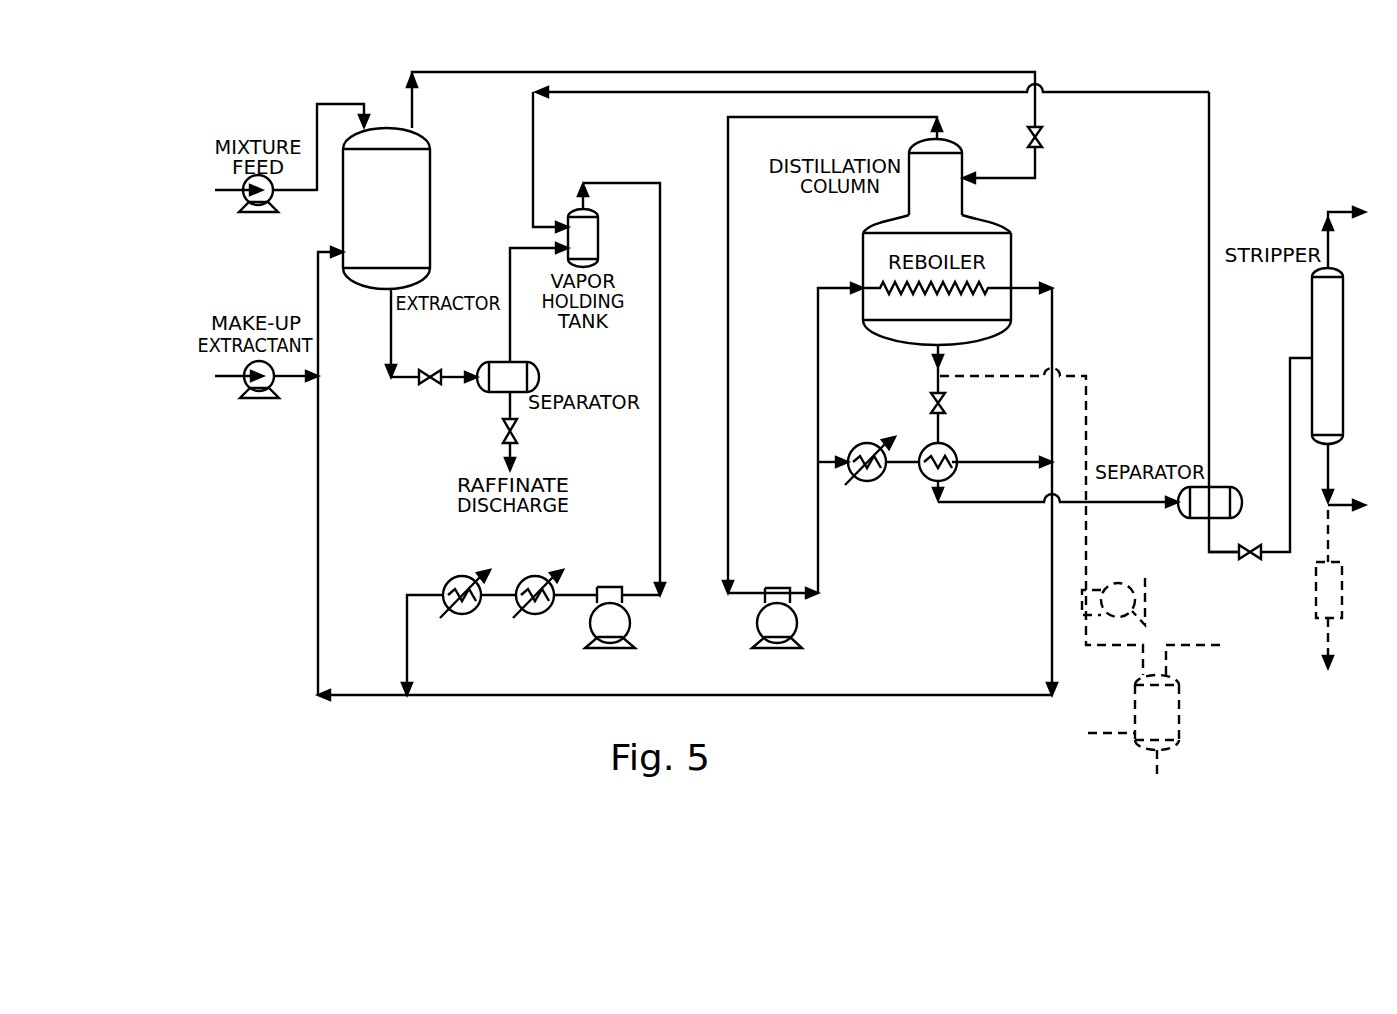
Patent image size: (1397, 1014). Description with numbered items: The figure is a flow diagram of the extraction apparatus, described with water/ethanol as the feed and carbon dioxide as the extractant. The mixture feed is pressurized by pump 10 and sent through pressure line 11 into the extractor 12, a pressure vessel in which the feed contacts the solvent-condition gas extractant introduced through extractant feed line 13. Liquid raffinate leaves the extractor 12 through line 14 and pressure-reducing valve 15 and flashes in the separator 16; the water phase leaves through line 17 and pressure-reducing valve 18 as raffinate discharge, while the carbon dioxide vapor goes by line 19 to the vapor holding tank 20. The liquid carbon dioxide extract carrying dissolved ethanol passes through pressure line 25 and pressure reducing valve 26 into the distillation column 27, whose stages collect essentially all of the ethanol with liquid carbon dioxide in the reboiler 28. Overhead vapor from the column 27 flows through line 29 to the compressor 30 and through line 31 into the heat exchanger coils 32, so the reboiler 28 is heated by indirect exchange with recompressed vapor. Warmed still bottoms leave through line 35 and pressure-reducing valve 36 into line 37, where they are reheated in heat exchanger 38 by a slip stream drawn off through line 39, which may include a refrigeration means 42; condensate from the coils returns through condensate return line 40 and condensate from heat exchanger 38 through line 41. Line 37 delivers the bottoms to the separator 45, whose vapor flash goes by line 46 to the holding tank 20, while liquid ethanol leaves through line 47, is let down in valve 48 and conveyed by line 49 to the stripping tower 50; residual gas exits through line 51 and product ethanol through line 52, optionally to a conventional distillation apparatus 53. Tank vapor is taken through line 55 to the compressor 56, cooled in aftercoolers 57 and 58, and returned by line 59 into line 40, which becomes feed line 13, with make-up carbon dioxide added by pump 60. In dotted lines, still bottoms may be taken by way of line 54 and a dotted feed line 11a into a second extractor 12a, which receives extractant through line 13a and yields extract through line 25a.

The pump 10 is at (252, 213).
The pressure line 11 is at (340, 103).
The extractor 12 is at (420, 218).
The extractant feed line 13 is at (322, 447).
The line 14 is at (389, 340).
The pressure-reducing valve 15 is at (438, 364).
The separator 16 is at (535, 376).
The line 17 is at (505, 406).
The pressure-reducing valve 18 is at (500, 433).
The line 19 is at (506, 328).
The vapor holding tank 20 is at (590, 241).
The pressure line 25 is at (797, 69).
The pressure reducing valve 26 is at (1045, 137).
The distillation column 27 is at (950, 203).
The reboiler 28 is at (1005, 270).
The line 29 is at (732, 268).
The compressor 30 is at (790, 623).
The line 31 is at (820, 389).
The heat exchanger coils 32 is at (968, 295).
The line 35 is at (945, 369).
The pressure-reducing valve 36 is at (948, 404).
The line 37 is at (958, 506).
The heat exchanger 38 is at (948, 456).
The line 39 is at (830, 456).
The condensate return line 40 is at (1050, 401).
The line 41 is at (998, 463).
The refrigeration means 42 is at (868, 481).
The separator 45 is at (1218, 493).
The line 46 is at (1210, 194).
The line 47 is at (1222, 559).
The valve 48 is at (1255, 561).
The line 49 is at (1285, 389).
The stripping tower 50 is at (1318, 316).
The line 51 is at (1330, 251).
The line 52 is at (1333, 469).
The conventional distillation apparatus 53 is at (1345, 586).
The line 54 is at (1116, 580).
The line 55 is at (662, 463).
The compressor 56 is at (625, 623).
The aftercooler 57 is at (540, 612).
The aftercooler 58 is at (465, 609).
The line 59 is at (402, 653).
The pump 60 is at (260, 392).
The optional feed line (dashed) 11a is at (1125, 651).
The second extractor 12a is at (1180, 716).
The line 13a is at (1118, 741).
The line 25a is at (1193, 649).